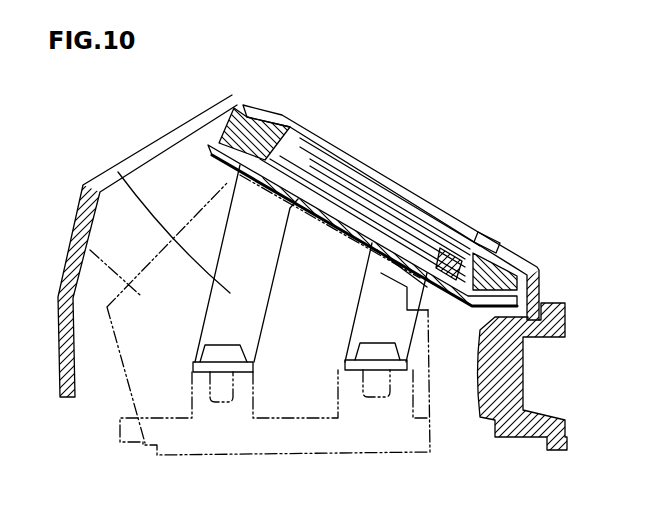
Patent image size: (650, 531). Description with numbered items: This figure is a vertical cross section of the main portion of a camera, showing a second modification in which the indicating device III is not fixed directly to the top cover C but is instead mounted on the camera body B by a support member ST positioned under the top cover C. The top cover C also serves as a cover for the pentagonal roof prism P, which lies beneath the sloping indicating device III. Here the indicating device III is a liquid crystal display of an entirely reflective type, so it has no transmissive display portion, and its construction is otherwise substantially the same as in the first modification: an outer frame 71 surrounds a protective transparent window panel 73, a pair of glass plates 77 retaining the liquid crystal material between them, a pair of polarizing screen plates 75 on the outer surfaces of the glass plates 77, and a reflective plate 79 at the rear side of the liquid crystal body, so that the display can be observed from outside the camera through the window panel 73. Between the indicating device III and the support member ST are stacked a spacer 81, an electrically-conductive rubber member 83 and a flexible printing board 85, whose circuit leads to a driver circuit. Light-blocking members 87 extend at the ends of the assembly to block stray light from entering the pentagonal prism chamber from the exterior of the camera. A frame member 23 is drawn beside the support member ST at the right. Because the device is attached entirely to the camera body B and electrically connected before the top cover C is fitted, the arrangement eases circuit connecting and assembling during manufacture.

The top cover C is at (176, 131).
The support member ST is at (207, 146).
The light-blocking member 87 is at (251, 108).
The outer frame 71 is at (300, 122).
The window panel 73 is at (337, 133).
The glass plate 77 is at (343, 182).
The indicating device III is at (377, 160).
The polarizing screen plate 75 is at (383, 212).
The reflective plate 79 is at (415, 213).
The flexible printing board 85 is at (440, 227).
The electrically-conductive rubber member 83 is at (467, 240).
The spacer 81 is at (481, 240).
The frame member 23 is at (515, 367).
The pentagonal roof prism P is at (90, 248).
The camera body B is at (200, 410).